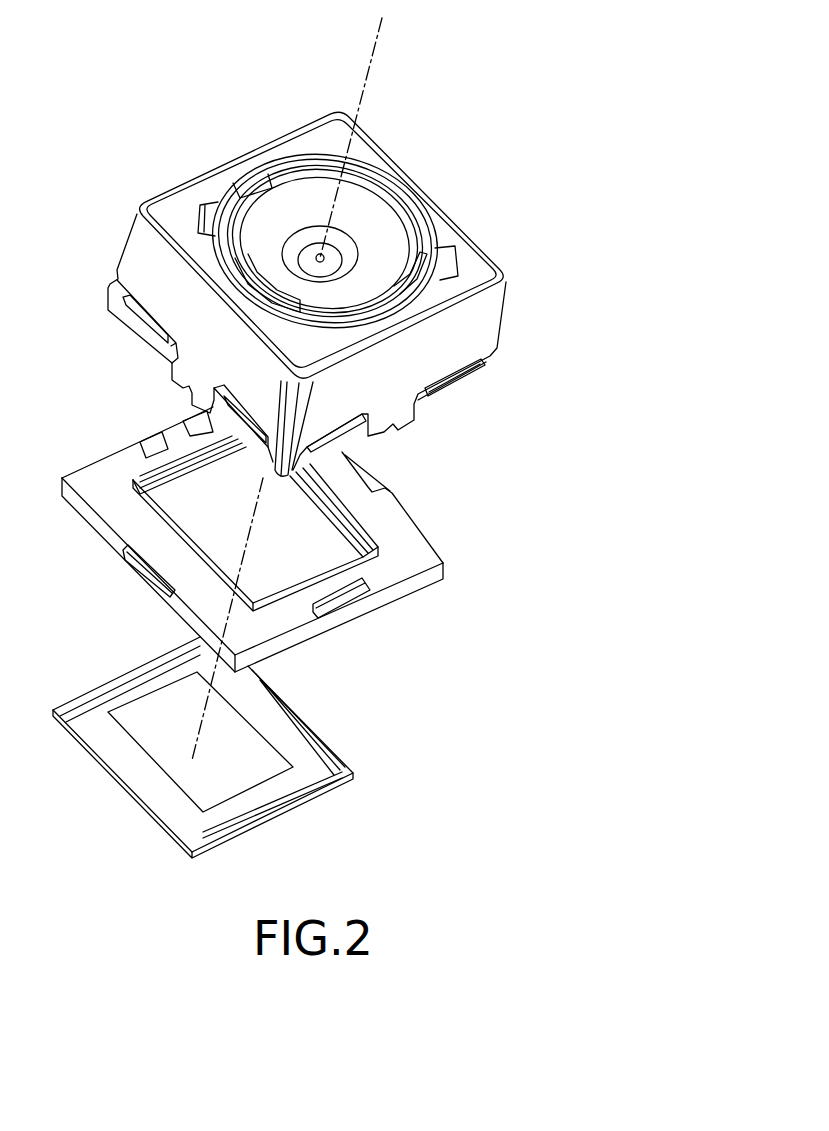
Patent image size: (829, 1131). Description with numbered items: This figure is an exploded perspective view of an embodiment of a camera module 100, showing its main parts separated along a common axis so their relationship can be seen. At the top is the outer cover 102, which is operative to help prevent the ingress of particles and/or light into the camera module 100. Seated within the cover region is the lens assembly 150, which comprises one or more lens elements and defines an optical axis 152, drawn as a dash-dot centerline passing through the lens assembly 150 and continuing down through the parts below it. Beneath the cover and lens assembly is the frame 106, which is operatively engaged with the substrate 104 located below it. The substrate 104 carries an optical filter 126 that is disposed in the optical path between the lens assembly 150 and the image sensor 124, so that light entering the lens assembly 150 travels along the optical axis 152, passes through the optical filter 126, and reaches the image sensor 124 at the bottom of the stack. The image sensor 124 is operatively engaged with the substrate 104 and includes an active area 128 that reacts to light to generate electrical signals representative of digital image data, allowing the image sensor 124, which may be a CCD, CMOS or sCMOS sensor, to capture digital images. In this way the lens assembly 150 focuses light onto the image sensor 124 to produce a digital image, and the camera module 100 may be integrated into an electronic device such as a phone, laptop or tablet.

The camera module 100 is at (542, 282).
The outer cover 102 is at (372, 145).
The substrate 104 is at (430, 550).
The frame 106 is at (483, 373).
The image sensor 124 is at (343, 758).
The optical filter 126 is at (320, 529).
The active area 128 is at (187, 783).
The lens assembly 150 is at (363, 240).
The optical axis 152 is at (378, 40).